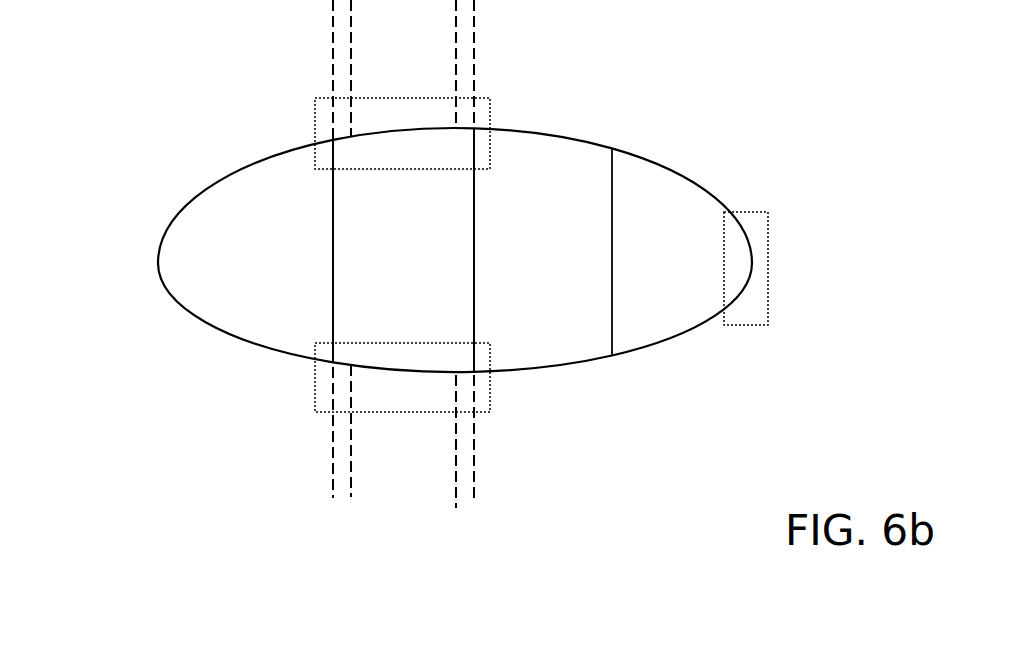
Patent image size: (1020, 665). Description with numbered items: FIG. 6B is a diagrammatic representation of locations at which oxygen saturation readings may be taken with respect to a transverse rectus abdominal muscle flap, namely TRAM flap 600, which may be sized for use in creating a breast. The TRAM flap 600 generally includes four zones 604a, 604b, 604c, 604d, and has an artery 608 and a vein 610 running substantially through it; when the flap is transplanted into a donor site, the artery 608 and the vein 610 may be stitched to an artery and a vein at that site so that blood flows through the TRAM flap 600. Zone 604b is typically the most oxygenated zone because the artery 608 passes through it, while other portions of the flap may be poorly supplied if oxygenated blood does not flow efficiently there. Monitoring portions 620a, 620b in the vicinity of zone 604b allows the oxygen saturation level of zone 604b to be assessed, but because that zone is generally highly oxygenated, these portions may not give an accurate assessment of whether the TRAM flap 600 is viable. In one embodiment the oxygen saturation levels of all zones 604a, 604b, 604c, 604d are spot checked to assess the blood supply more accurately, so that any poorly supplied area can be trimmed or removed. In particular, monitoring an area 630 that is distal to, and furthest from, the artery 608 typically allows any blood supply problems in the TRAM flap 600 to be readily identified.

The TRAM flap 600 is at (445, 284).
The zone 604a is at (236, 275).
The zone 604b is at (384, 348).
The zone 604c is at (564, 275).
The zone 604d is at (705, 274).
The artery 608 is at (289, 249).
The vein 610 is at (517, 254).
The monitoring portion 620a is at (461, 116).
The monitoring portion 620b is at (462, 360).
The area 630 is at (799, 264).